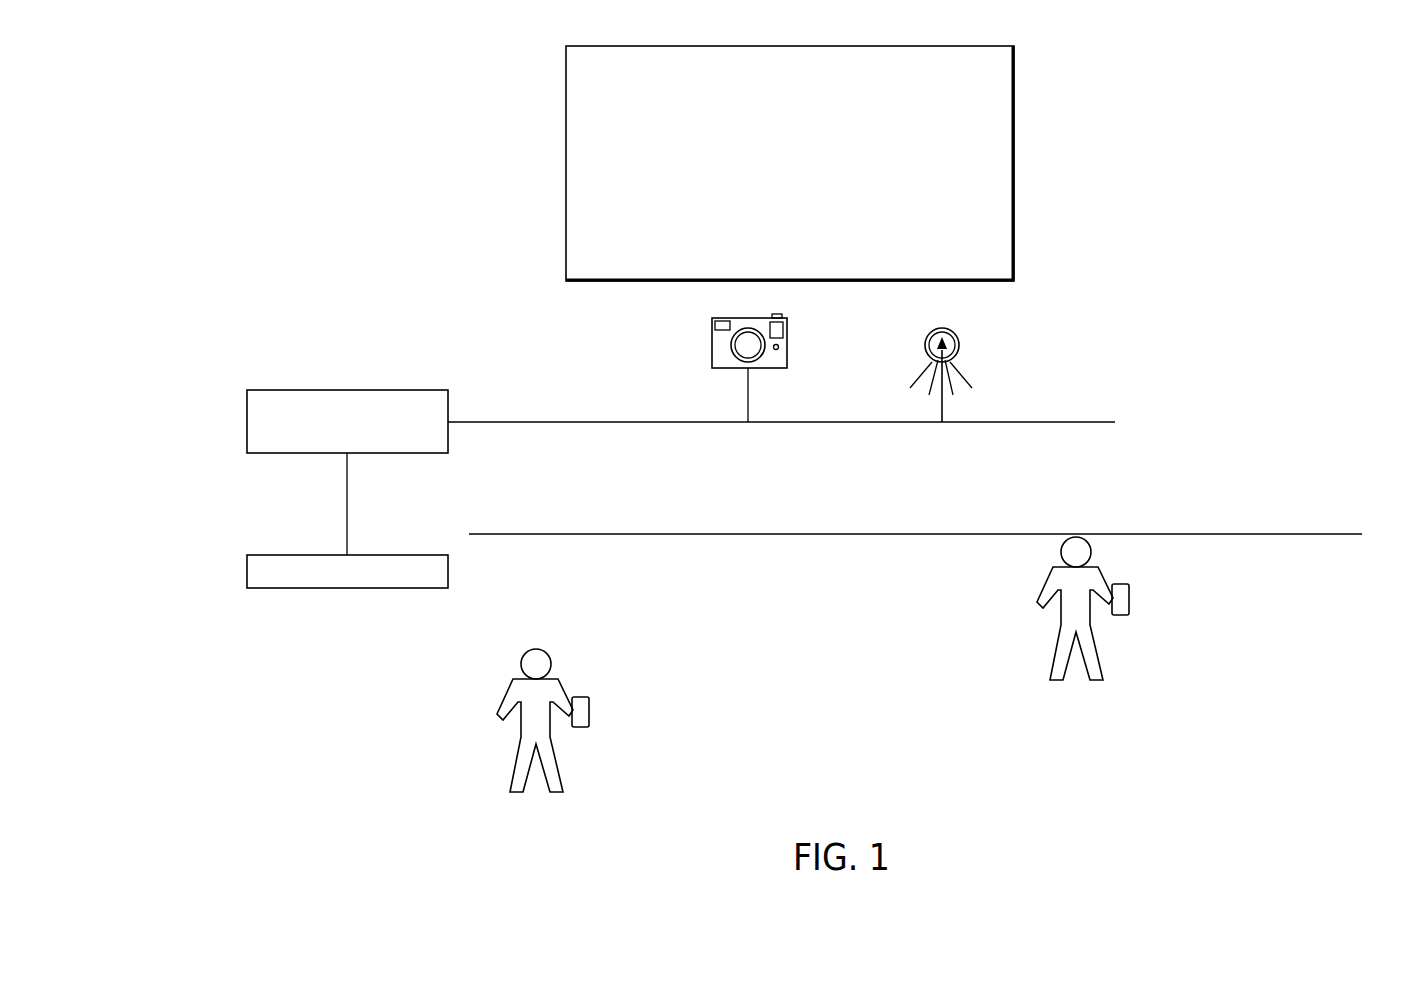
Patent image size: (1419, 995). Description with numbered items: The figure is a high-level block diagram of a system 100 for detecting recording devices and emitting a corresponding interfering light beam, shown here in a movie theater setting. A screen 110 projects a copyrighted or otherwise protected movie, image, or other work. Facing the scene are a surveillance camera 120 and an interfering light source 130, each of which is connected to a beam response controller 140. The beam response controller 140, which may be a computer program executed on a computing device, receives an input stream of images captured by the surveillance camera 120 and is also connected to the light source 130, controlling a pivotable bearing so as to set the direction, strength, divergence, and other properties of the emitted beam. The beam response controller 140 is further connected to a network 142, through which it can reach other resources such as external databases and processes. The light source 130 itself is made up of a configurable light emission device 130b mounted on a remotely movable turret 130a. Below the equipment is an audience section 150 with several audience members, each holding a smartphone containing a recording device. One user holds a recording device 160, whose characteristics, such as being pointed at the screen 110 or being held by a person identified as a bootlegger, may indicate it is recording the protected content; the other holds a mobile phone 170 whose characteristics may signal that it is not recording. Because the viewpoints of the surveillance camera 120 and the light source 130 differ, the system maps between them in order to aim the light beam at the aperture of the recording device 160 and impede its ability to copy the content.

The system 100 is at (297, 116).
The screen 110 is at (566, 137).
The surveillance camera 120 is at (712, 346).
The interfering light source 130 is at (950, 367).
The remotely movable turret 130a is at (932, 360).
The configurable light emission device 130b is at (925, 345).
The beam response controller 140 is at (247, 422).
The network 142 is at (247, 574).
The audience section 150 is at (915, 504).
The recording device 160 is at (1119, 608).
The mobile phone 170 is at (580, 720).